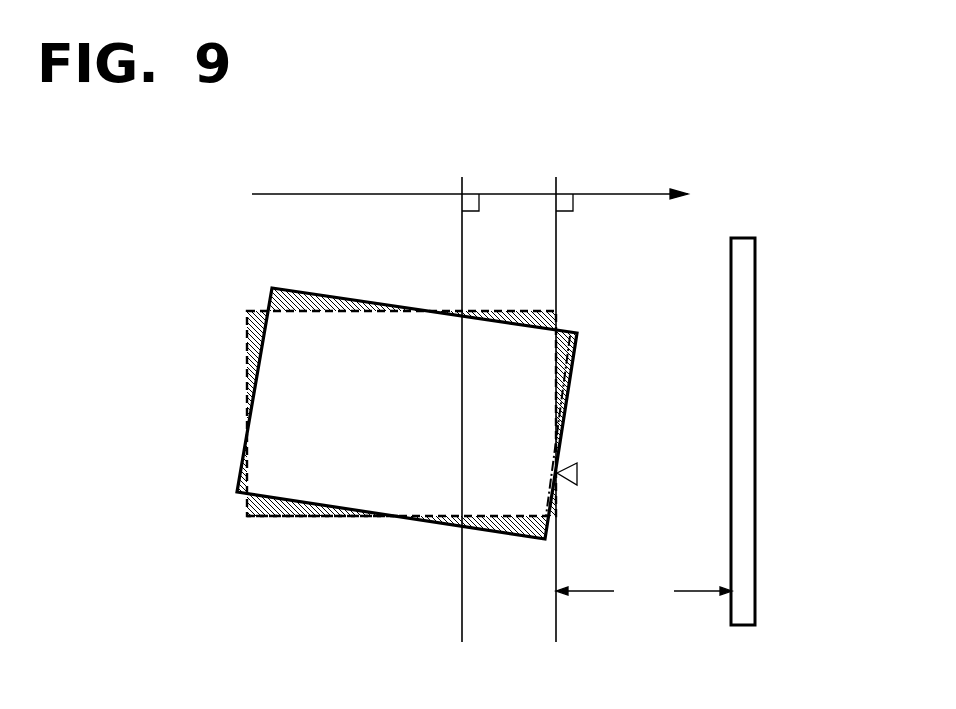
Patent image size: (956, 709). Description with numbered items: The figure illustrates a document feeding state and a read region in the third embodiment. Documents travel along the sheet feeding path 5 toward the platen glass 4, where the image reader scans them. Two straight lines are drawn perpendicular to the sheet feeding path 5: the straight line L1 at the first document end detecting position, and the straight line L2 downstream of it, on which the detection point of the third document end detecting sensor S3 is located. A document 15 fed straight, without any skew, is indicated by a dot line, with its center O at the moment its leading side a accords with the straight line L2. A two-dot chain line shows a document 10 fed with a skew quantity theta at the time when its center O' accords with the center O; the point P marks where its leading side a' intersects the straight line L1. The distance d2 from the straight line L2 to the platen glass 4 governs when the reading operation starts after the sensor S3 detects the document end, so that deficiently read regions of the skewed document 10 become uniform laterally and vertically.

The platen glass 4 is at (743, 250).
The sheet feeding path 5 is at (624, 193).
The document 10 is at (280, 338).
The document 15 is at (281, 518).
The straight line L1 is at (462, 616).
The straight line L2 is at (556, 616).
The third document end detecting sensor S3 is at (577, 472).
The distance d2 is at (644, 591).